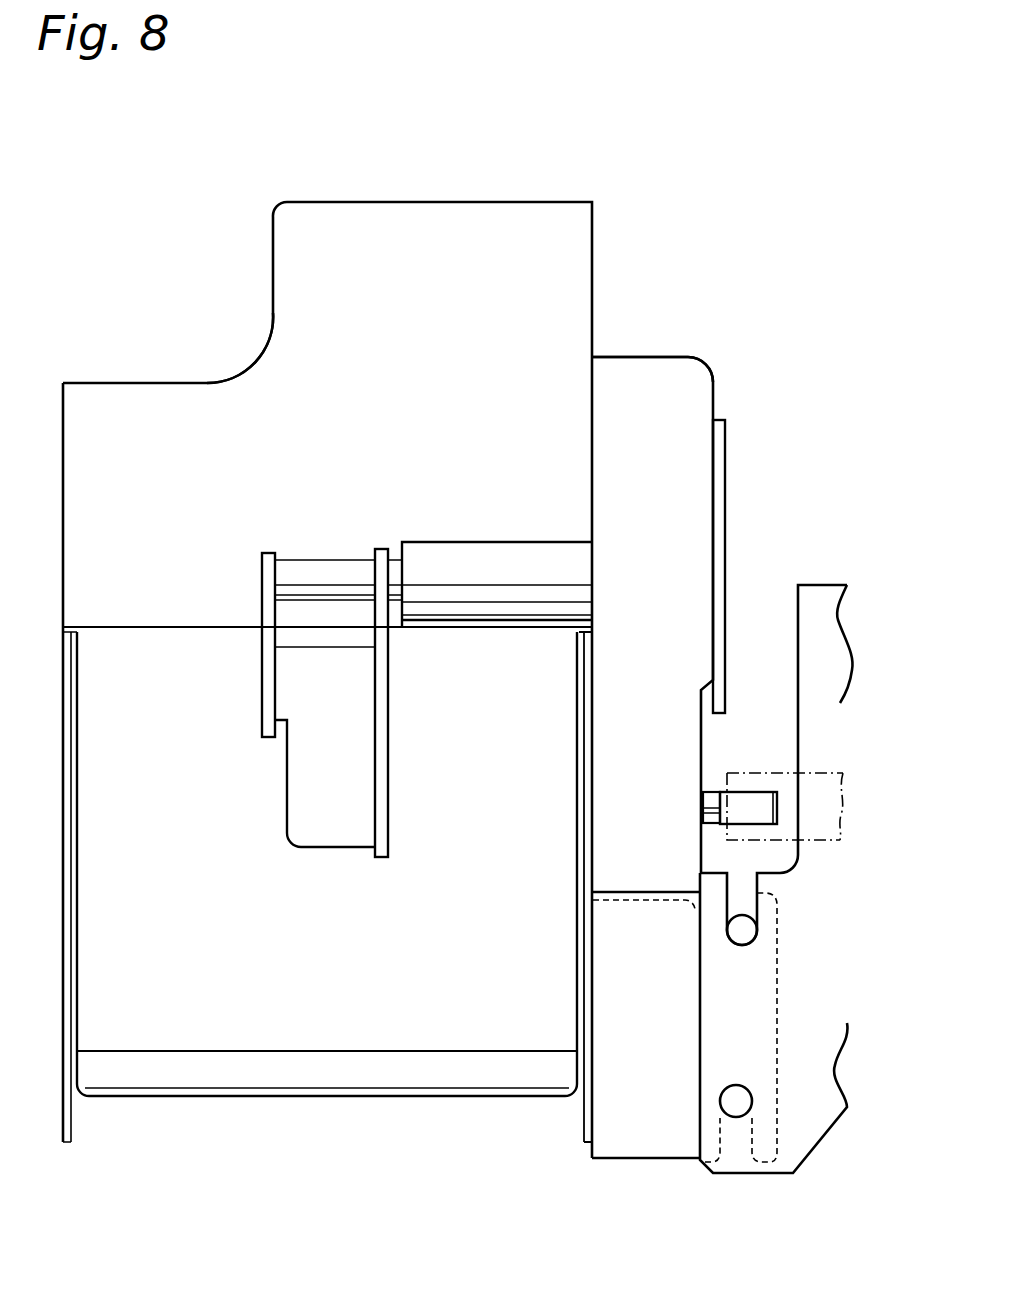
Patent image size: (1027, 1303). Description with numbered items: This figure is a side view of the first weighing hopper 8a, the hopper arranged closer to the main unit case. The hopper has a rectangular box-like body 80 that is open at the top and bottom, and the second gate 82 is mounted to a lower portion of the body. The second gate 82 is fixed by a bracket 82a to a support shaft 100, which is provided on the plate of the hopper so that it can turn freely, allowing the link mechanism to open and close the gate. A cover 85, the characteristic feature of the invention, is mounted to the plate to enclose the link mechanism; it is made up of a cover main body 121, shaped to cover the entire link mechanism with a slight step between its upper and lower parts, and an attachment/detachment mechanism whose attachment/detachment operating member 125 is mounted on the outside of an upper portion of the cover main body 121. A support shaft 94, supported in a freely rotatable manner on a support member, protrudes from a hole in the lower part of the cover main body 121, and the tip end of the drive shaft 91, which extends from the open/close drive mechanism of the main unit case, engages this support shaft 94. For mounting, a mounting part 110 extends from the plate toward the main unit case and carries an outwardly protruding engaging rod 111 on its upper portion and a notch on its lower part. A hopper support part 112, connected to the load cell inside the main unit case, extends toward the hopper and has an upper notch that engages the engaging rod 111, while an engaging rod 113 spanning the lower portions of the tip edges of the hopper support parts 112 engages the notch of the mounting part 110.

The first weighing hopper 8a is at (205, 326).
The box-like body 80 is at (525, 233).
The second gate 82 is at (380, 1025).
The bracket 82a is at (342, 728).
The cover 85 is at (704, 313).
The drive shaft 91 is at (815, 782).
The support shaft 94 is at (737, 797).
The support shaft 100 is at (447, 572).
The mounting part 110 is at (630, 1095).
The engaging rod 111 is at (752, 930).
The hopper support part 112 is at (813, 1112).
The engaging rod 113 is at (752, 1088).
The cover main body 121 is at (712, 377).
The attachment/detachment operating member 125 is at (725, 557).